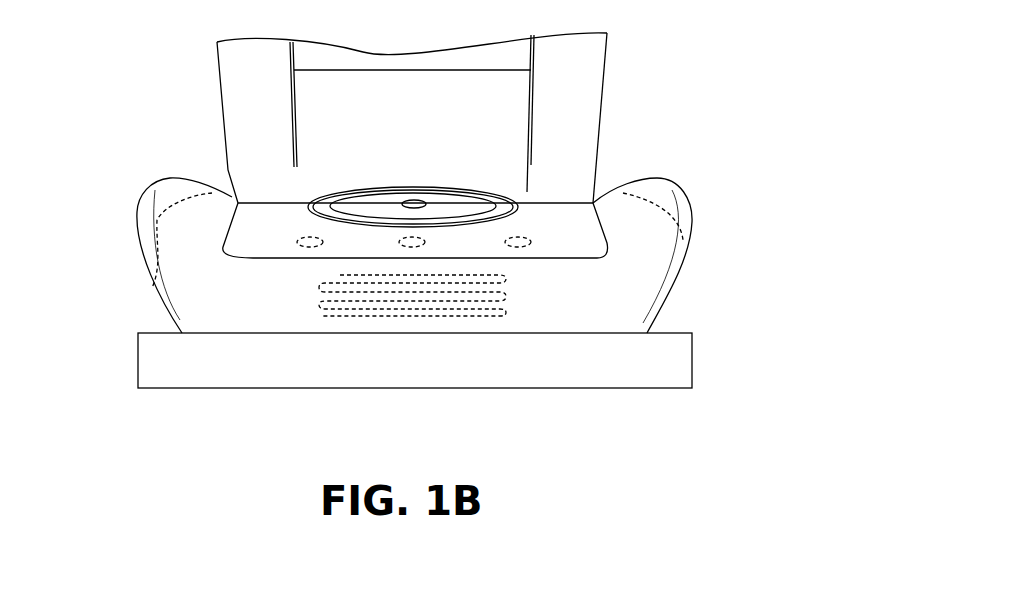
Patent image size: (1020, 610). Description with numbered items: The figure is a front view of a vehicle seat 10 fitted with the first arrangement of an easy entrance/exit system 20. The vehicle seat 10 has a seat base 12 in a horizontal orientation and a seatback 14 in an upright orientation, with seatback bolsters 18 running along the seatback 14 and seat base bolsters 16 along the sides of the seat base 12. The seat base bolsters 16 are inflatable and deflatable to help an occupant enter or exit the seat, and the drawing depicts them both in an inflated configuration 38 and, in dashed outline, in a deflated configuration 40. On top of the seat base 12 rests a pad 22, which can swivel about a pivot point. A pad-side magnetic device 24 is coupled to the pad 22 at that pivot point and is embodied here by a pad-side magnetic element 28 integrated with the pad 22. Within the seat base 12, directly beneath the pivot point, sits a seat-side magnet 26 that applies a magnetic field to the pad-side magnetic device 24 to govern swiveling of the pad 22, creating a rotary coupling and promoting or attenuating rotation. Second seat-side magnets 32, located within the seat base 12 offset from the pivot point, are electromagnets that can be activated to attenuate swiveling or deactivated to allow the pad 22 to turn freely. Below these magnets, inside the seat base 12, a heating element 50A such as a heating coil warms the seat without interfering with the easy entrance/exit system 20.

The vehicle seat 10 is at (399, 107).
The seat base 12 is at (607, 322).
The seatback 14 is at (600, 142).
The seat base bolsters 16 is at (663, 260).
The seatback bolsters 18 is at (578, 98).
The easy entrance/exit system 20 is at (195, 96).
The pad 22 is at (315, 203).
The pad-side magnetic device 24 is at (413, 173).
The pad-side magnetic element 28 is at (413, 200).
The seat-side magnet 26 is at (412, 247).
The second seat-side magnets 32 is at (310, 247).
The inflated configuration 38 is at (137, 210).
The deflated configuration 40 is at (150, 288).
The heating element 50A is at (312, 283).